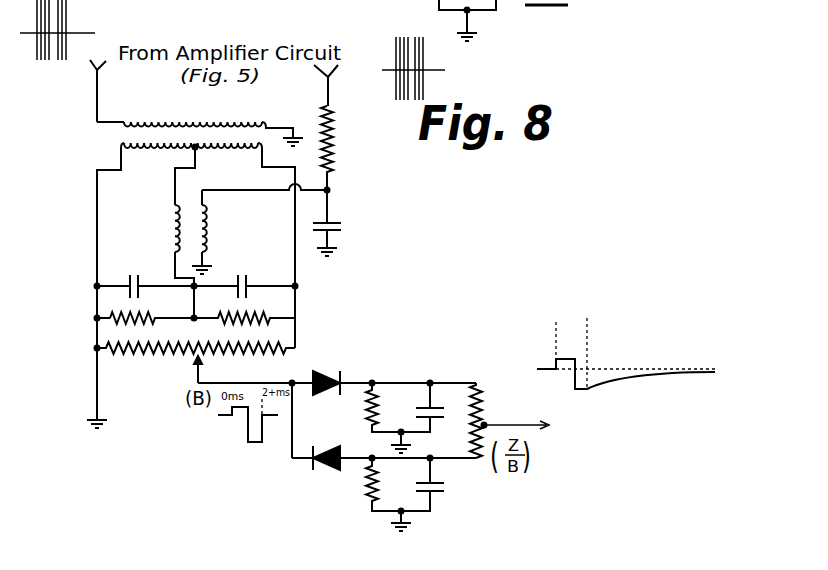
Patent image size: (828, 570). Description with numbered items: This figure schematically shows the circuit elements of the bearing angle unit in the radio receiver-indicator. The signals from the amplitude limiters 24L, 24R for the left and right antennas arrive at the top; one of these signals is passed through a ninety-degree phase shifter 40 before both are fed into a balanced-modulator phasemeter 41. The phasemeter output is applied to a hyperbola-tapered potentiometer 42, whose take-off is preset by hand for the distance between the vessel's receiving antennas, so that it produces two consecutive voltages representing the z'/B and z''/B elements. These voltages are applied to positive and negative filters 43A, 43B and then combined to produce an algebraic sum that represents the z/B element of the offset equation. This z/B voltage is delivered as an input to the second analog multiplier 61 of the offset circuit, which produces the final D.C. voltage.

The amplitude limiter 24L is at (95, 70).
The amplitude limiter 24R is at (331, 72).
The 90° phase shifter 40 is at (330, 190).
The balanced-modulator phasemeter 41 is at (152, 232).
The hyperbola-tapered potentiometer 42 is at (196, 359).
The positive filter 43A is at (419, 413).
The negative filter 43B is at (419, 494).
The second analog multiplier 61 is at (619, 384).